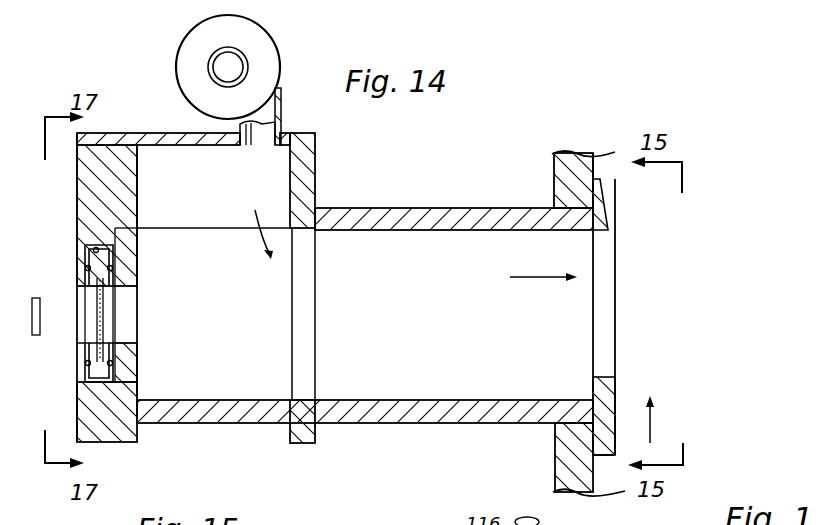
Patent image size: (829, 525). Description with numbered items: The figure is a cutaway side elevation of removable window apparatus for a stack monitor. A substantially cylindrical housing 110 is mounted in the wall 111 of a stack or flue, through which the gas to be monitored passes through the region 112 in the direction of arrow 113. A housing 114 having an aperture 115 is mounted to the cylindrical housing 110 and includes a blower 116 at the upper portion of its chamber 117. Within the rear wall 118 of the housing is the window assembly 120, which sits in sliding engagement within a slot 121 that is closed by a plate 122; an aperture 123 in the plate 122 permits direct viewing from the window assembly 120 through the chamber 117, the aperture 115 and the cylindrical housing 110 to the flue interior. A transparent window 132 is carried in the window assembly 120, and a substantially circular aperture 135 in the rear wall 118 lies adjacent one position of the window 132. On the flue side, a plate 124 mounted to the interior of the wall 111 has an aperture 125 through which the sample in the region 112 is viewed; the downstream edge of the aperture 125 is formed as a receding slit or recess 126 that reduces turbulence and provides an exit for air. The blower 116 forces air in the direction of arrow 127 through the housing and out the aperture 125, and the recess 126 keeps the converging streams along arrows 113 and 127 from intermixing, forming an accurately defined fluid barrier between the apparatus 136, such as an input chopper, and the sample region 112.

The cylindrical housing 110 is at (455, 206).
The wall of stack or flue 111 is at (554, 178).
The region 112 is at (742, 325).
The arrow 113 is at (652, 427).
The housing 114 is at (312, 166).
The aperture 115 is at (315, 300).
The blower 116 is at (283, 52).
The chamber 117 is at (240, 323).
The rear wall 118 is at (77, 200).
The window assembly 120 is at (116, 277).
The slot 121 is at (85, 252).
The plate 122 is at (137, 378).
The aperture 123 is at (130, 333).
The plate 124 is at (615, 394).
The aperture 125 is at (612, 333).
The recess 126 is at (610, 205).
The arrow 127 is at (556, 282).
The transparent window 132 is at (106, 318).
The circular aperture 135 is at (80, 340).
The apparatus 136 is at (62, 278).